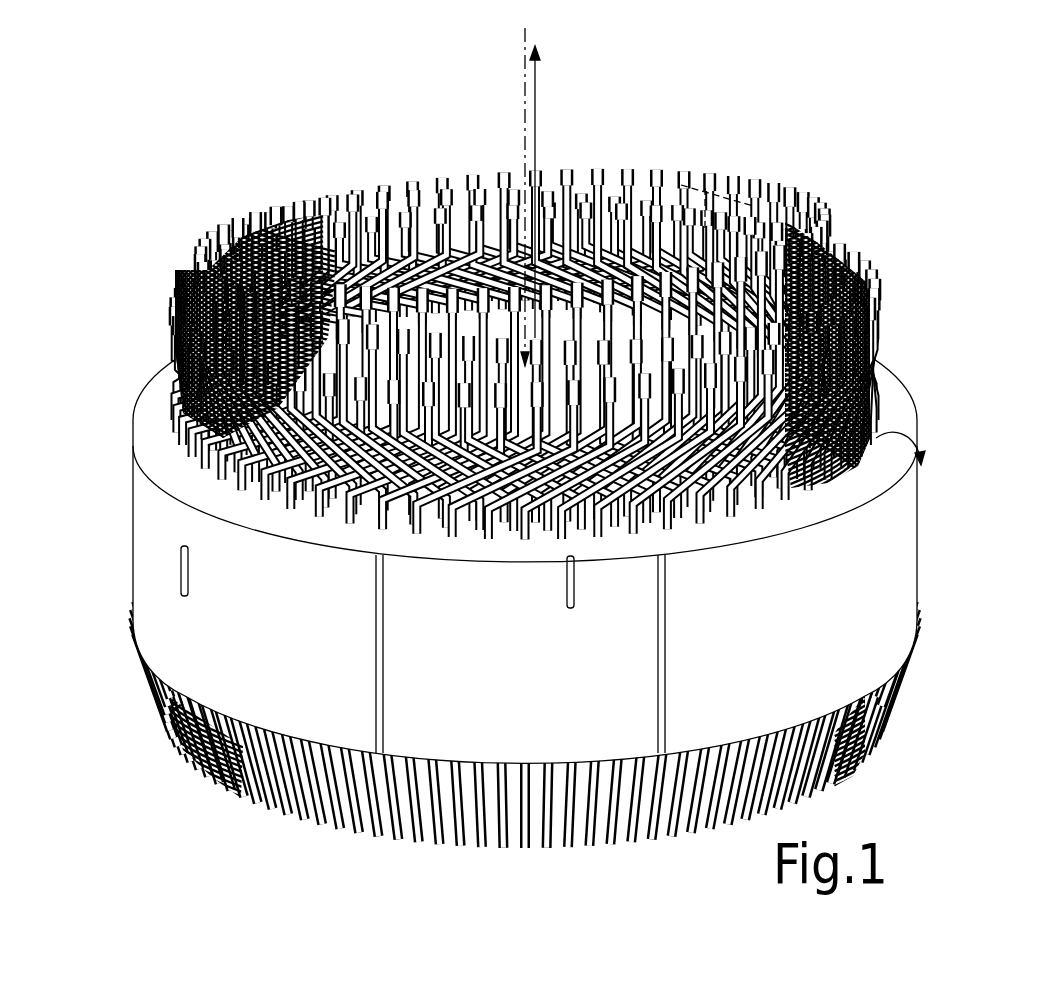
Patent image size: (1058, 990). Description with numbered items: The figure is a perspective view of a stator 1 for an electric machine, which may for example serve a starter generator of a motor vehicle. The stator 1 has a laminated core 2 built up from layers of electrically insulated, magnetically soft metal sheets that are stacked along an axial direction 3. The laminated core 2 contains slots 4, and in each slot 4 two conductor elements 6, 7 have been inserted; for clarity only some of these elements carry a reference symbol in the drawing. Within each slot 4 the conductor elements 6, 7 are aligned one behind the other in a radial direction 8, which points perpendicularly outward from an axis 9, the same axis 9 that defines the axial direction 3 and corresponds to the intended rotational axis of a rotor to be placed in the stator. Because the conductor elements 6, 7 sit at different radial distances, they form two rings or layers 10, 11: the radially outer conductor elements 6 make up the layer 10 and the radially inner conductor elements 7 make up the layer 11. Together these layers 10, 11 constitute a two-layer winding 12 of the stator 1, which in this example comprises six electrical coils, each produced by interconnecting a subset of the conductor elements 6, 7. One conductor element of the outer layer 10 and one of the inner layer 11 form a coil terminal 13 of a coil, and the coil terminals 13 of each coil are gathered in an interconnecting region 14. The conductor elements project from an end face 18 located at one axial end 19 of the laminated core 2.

The stator 1 is at (158, 180).
The laminated core 2 is at (506, 524).
The axial direction 3 is at (531, 77).
The slots 4 is at (506, 459).
The conductor elements 6 is at (600, 205).
The conductor elements 7 is at (590, 190).
The radial direction 8 is at (905, 420).
The axis 9 is at (513, 95).
The layer 10 is at (820, 237).
The layer 11 is at (783, 228).
The two-layer winding 12 is at (145, 261).
The coil terminal 13 is at (690, 195).
The interconnecting region 14 is at (317, 140).
The end face 18 is at (144, 406).
The axial end 19 is at (150, 450).